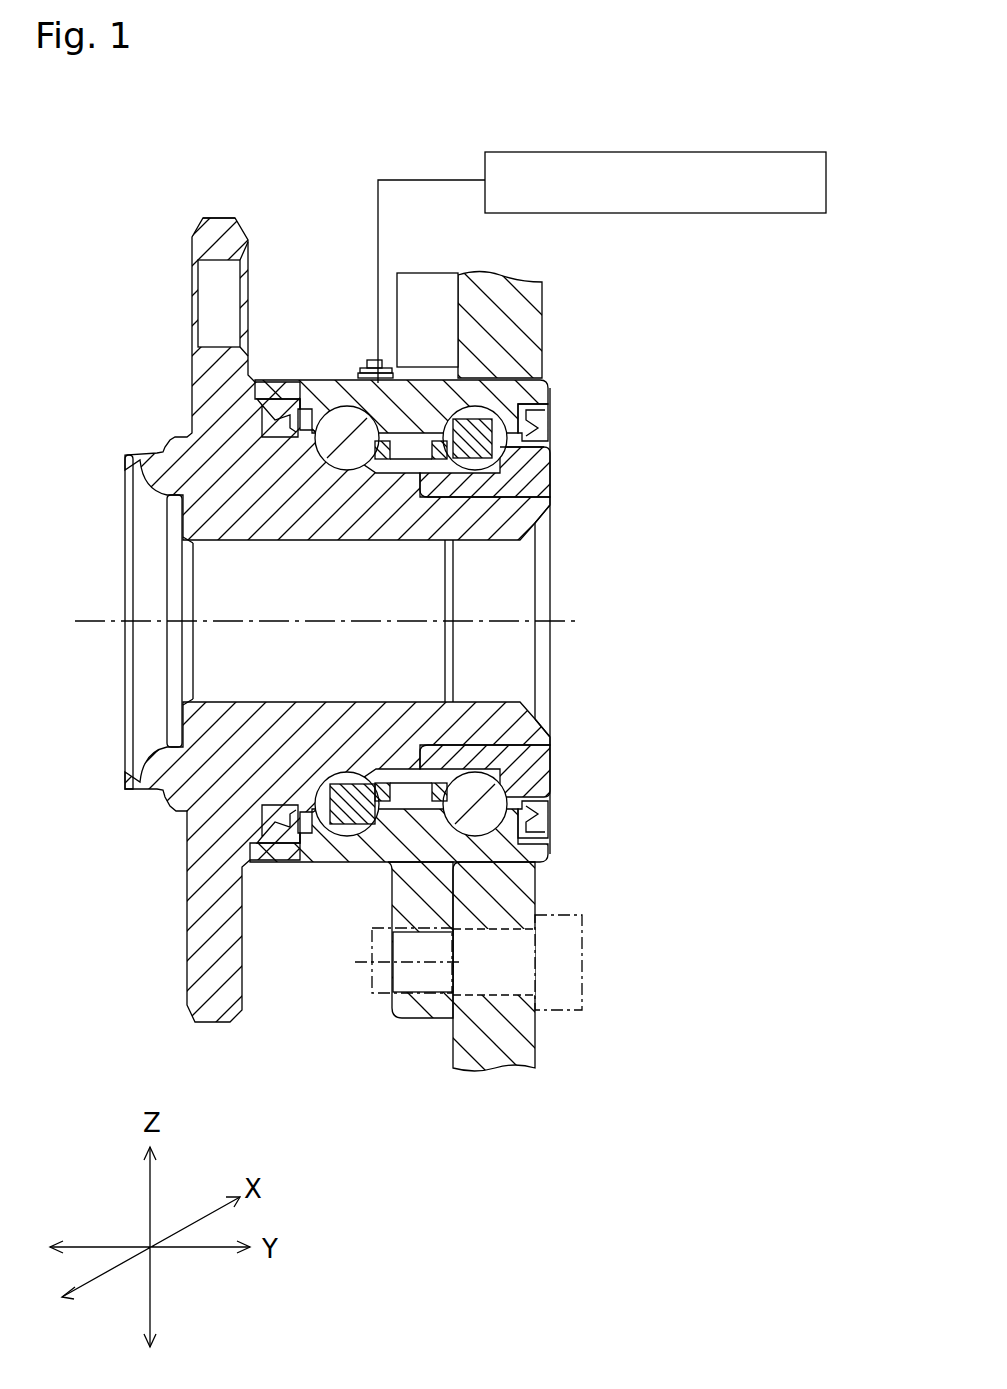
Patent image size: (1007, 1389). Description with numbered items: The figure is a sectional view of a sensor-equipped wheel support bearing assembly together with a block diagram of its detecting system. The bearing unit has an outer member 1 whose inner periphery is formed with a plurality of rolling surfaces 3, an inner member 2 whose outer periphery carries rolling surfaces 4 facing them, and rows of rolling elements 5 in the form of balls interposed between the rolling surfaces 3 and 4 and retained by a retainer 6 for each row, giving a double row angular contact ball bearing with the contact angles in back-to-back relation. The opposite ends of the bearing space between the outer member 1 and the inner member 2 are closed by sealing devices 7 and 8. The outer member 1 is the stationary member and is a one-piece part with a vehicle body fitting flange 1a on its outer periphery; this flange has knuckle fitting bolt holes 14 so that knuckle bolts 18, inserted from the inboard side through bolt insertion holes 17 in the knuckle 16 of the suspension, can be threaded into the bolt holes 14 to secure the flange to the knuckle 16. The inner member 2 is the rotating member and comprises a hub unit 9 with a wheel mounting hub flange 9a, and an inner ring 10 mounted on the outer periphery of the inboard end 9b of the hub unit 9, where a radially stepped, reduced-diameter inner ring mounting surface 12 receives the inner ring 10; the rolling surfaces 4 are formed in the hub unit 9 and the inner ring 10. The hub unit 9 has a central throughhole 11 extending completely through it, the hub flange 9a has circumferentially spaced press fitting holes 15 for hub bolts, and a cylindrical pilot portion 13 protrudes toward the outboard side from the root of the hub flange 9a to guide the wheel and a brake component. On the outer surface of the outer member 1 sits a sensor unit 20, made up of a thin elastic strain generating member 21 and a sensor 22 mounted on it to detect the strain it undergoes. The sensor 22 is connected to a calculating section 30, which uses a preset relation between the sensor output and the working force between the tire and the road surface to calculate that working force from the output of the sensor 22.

The outer member 1 is at (330, 866).
The vehicle body fitting flange 1a is at (428, 1020).
The inner member 2 is at (62, 494).
The rolling surfaces 3 is at (535, 872).
The rolling surfaces 4 is at (535, 785).
The rolling elements 5 is at (528, 852).
The retainer 6 is at (400, 785).
The sealing device 7 is at (268, 407).
The sealing device 8 is at (549, 425).
The hub unit 9 is at (210, 505).
The wheel mounting hub flange 9a is at (214, 217).
The inboard end of hub unit 9b is at (523, 520).
The inner ring 10 is at (420, 483).
The throughhole 11 is at (290, 700).
The inner ring mounting surface 12 is at (513, 485).
The pilot portion 13 is at (125, 455).
The knuckle fitting bolt holes 14 is at (413, 995).
The press fitting holes 15 is at (197, 267).
The knuckle 16 is at (500, 1070).
The bolt insertion holes 17 is at (507, 992).
The knuckle bolts 18 is at (583, 985).
The sensor unit 20 is at (355, 345).
The strain generating member 21 is at (367, 360).
The sensor 22 is at (383, 358).
The calculating section 30 is at (563, 150).